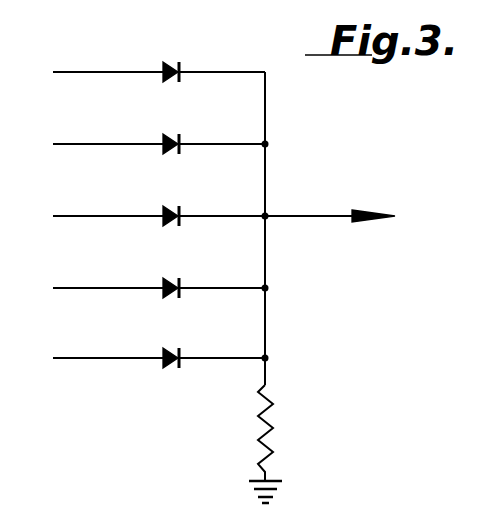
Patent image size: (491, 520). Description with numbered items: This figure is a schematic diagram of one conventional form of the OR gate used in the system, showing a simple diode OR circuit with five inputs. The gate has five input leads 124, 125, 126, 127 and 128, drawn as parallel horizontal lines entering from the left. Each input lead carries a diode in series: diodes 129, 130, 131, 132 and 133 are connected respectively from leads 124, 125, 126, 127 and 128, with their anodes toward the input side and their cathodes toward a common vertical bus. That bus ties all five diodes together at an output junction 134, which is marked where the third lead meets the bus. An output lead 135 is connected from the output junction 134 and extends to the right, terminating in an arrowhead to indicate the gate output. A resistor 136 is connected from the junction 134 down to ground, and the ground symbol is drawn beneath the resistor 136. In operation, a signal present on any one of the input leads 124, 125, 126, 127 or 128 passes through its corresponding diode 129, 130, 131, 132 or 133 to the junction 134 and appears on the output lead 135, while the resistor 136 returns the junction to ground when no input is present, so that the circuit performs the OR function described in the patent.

The input lead 124 is at (82, 73).
The input lead 125 is at (82, 145).
The input lead 126 is at (86, 217).
The input lead 127 is at (92, 289).
The input lead 128 is at (90, 359).
The diode 129 is at (168, 63).
The diode 130 is at (168, 135).
The diode 131 is at (168, 206).
The diode 132 is at (168, 278).
The diode 133 is at (168, 349).
The output junction 134 is at (266, 215).
The output lead 135 is at (322, 218).
The resistor 136 is at (270, 410).